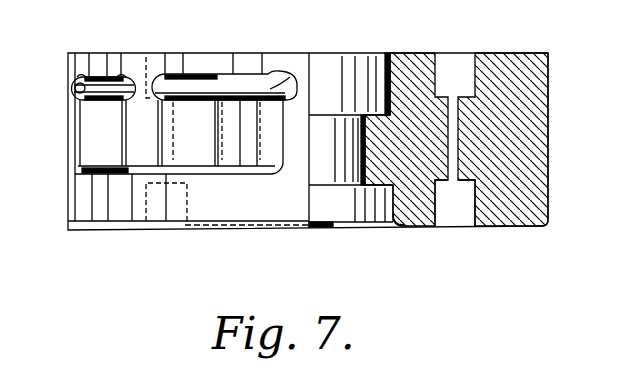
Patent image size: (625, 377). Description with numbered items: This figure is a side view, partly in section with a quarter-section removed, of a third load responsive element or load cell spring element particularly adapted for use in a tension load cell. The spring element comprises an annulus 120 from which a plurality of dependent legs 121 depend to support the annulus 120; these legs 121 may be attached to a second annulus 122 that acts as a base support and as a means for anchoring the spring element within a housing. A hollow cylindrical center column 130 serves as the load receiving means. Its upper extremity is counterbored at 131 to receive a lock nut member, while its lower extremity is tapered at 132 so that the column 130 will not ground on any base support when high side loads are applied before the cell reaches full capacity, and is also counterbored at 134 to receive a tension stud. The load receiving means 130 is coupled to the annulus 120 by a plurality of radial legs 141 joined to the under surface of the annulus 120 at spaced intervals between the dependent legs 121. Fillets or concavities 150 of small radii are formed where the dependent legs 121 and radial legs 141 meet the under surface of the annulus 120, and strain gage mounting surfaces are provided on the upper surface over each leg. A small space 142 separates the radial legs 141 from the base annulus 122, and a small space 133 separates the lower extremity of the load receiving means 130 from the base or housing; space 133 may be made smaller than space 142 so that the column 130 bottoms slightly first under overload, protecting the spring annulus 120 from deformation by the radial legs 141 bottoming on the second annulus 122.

The annulus 120 is at (236, 53).
The dependent legs 121 is at (68, 114).
The second annulus 122 is at (113, 230).
The hollow cylindrical center column 130 is at (430, 53).
The counterbore 131 is at (380, 53).
The taper 132 is at (432, 227).
The small space 133 is at (338, 227).
The counterbore 134 is at (384, 226).
The radial legs 141 is at (123, 131).
The small space 142 is at (127, 170).
The fillets 150 is at (71, 86).